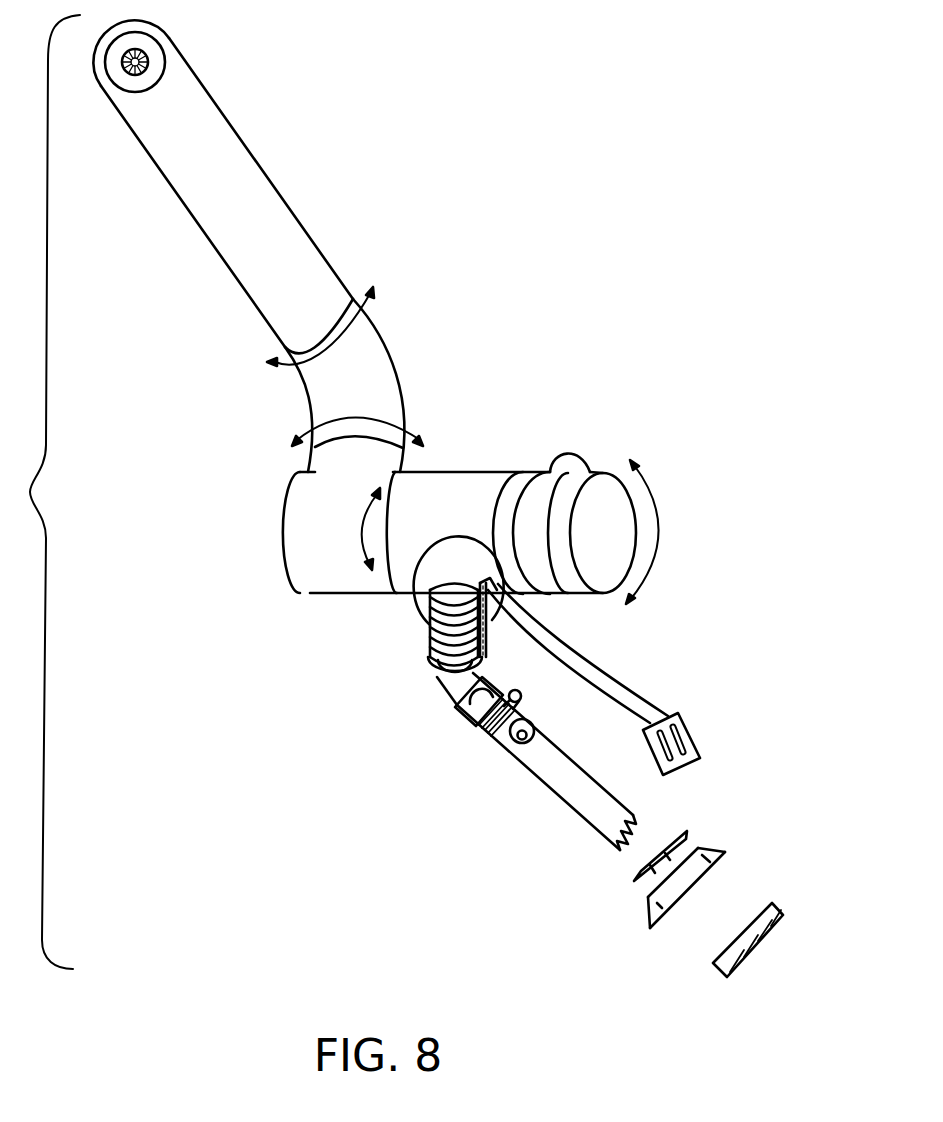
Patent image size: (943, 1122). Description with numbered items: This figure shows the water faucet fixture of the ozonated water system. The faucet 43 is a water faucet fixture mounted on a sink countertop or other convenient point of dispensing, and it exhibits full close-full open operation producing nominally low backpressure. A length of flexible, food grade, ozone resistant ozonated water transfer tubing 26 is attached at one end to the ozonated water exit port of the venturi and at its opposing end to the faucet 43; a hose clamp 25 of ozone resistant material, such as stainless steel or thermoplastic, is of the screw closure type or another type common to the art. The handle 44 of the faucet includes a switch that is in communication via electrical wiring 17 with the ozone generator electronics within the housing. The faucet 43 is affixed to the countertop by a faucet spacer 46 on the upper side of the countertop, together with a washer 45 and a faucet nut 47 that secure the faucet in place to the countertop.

The electrical wiring 17 is at (697, 747).
The hose clamp 25 is at (478, 725).
The ozonated water transfer tubing 26 is at (553, 793).
The faucet 43 is at (458, 471).
The handle 44 is at (588, 470).
The washer 45 is at (683, 835).
The faucet spacer 46 is at (725, 850).
The faucet nut 47 is at (783, 915).